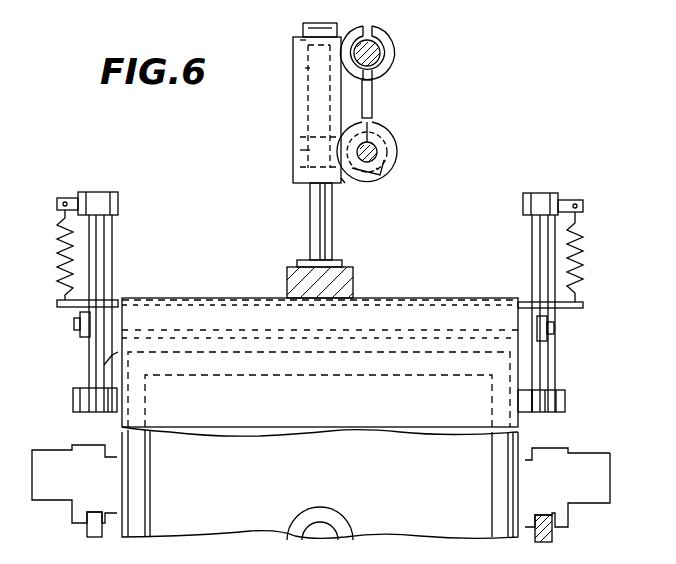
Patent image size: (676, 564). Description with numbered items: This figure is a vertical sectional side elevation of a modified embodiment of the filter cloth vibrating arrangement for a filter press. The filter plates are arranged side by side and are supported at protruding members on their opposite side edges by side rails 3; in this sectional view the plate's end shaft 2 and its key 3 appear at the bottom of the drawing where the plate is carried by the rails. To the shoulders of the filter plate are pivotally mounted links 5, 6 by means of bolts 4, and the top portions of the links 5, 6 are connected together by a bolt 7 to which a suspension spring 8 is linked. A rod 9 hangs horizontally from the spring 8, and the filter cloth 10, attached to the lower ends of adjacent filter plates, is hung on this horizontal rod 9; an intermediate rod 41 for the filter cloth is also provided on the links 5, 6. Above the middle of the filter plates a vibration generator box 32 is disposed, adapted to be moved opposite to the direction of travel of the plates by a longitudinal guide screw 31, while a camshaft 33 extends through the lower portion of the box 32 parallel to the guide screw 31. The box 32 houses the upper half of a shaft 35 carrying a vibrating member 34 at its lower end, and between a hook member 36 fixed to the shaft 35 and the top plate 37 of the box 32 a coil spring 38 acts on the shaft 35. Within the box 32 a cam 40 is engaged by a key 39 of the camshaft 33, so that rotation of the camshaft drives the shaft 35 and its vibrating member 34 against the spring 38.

The shaft 2 is at (560, 503).
The side rails 3 is at (552, 532).
The bolts 4 is at (565, 402).
The link 5 is at (550, 378).
The link 6 is at (550, 350).
The bolt 7 is at (578, 200).
The suspension spring 8 is at (580, 242).
The rod 9 is at (583, 300).
The filter cloth 10 is at (322, 422).
The longitudinal guide screw 31 is at (380, 50).
The vibration generator box 32 is at (294, 115).
The camshaft 33 is at (384, 150).
The vibrating member 34 is at (288, 280).
The shaft 35 is at (311, 224).
The hook member 36 is at (300, 150).
The top plate 37 is at (300, 40).
The coil spring 38 is at (305, 70).
The key 39 is at (378, 170).
The cam 40 is at (341, 183).
The intermediate rod 41 is at (104, 350).